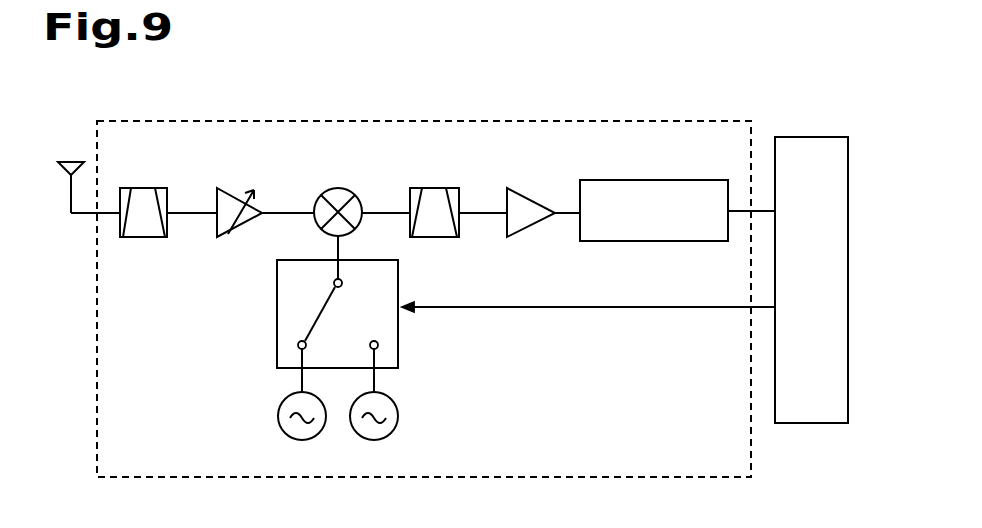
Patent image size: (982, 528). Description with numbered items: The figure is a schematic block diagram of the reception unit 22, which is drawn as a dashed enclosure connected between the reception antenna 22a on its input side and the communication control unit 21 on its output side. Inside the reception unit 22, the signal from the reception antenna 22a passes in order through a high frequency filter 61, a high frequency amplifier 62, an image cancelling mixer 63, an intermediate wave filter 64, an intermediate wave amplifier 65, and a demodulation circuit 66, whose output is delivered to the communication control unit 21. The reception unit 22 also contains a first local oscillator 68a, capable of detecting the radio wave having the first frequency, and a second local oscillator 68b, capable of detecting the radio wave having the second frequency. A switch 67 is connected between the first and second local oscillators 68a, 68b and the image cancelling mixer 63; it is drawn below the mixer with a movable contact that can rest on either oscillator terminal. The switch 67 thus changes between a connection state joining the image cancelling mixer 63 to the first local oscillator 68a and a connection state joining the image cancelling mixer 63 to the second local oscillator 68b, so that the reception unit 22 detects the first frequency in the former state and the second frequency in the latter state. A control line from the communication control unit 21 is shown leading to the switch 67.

The communication control unit 21 is at (812, 137).
The reception unit 22 is at (720, 120).
The reception antenna 22a is at (72, 160).
The high frequency filter 61 is at (143, 188).
The high frequency amplifier 62 is at (236, 190).
The image cancelling mixer 63 is at (338, 188).
The intermediate wave filter 64 is at (435, 188).
The intermediate wave amplifier 65 is at (522, 190).
The demodulation circuit 66 is at (690, 180).
The switch 67 is at (400, 346).
The first local oscillator 68a is at (278, 416).
The second local oscillator 68b is at (398, 416).